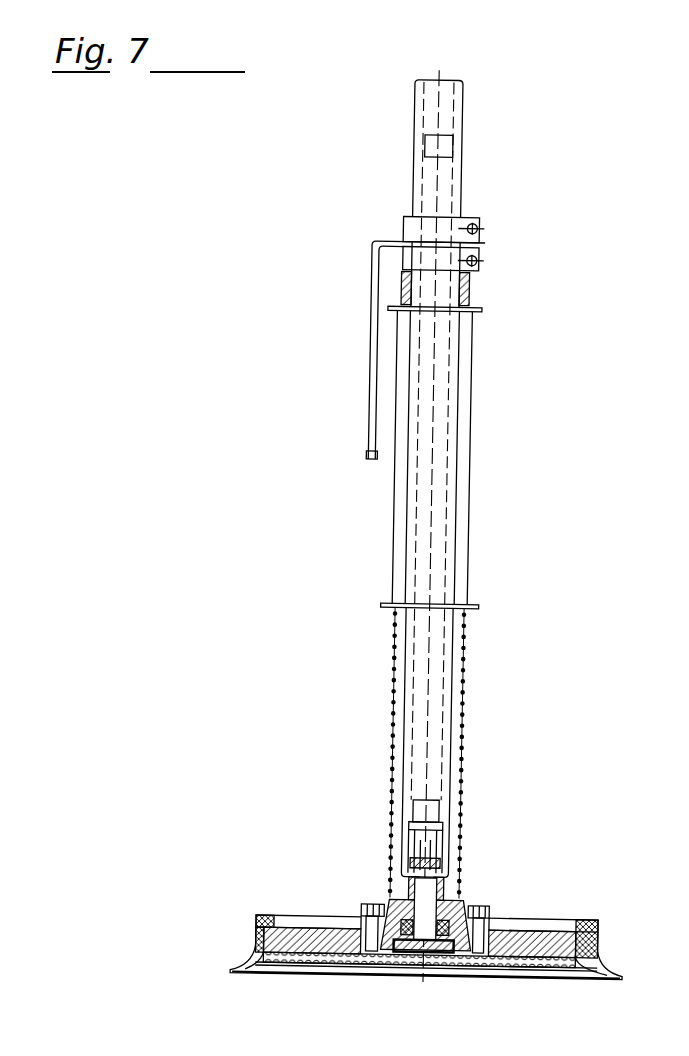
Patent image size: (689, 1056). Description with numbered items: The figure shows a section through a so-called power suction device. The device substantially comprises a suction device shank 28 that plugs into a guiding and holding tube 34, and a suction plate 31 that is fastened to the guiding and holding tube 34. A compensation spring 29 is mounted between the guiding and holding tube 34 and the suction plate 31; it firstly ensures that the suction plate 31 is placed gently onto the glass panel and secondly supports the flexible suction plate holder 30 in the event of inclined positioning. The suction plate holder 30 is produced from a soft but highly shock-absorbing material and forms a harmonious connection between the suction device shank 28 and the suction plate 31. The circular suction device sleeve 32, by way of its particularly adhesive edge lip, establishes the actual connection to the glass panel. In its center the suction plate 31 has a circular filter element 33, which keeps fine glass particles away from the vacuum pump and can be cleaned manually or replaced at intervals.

The suction device shank 28 is at (450, 507).
The compensation spring 29 is at (462, 733).
The suction plate holder 30 is at (388, 905).
The suction plate 31 is at (543, 937).
The suction device sleeve 32 is at (533, 967).
The filter element 33 is at (404, 952).
The guiding and holding tube 34 is at (393, 512).